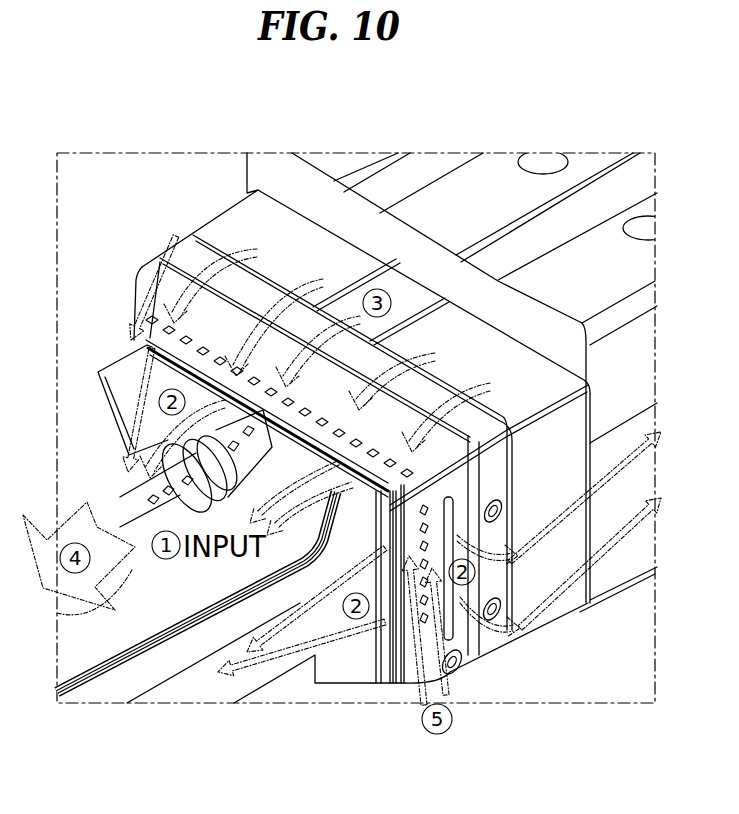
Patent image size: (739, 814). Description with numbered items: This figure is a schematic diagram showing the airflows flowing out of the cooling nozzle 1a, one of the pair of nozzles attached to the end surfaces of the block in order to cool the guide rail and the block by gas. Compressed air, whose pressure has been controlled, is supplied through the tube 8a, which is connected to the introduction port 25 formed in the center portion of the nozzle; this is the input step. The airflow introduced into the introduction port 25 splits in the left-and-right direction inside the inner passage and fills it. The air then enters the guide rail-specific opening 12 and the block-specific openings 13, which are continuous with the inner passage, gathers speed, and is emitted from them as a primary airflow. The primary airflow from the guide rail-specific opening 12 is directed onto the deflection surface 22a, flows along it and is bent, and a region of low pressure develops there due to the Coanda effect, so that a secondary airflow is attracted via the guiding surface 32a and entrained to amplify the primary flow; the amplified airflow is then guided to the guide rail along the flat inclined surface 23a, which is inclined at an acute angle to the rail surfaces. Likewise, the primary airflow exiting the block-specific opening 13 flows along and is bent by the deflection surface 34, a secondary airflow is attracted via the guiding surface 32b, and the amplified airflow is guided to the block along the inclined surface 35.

The cooling nozzle 1a is at (146, 328).
The guide rail-specific opening 12 is at (287, 410).
The introduction port 25 is at (142, 335).
The tube 8a is at (110, 512).
The inclined surface 23a is at (200, 615).
The deflection surface 22a is at (312, 490).
The guiding surface 32a is at (333, 530).
The guiding surface 32b is at (402, 560).
The block-specific opening 13 is at (523, 580).
The deflection surface 34 is at (478, 590).
The inclined surface 35 is at (497, 627).